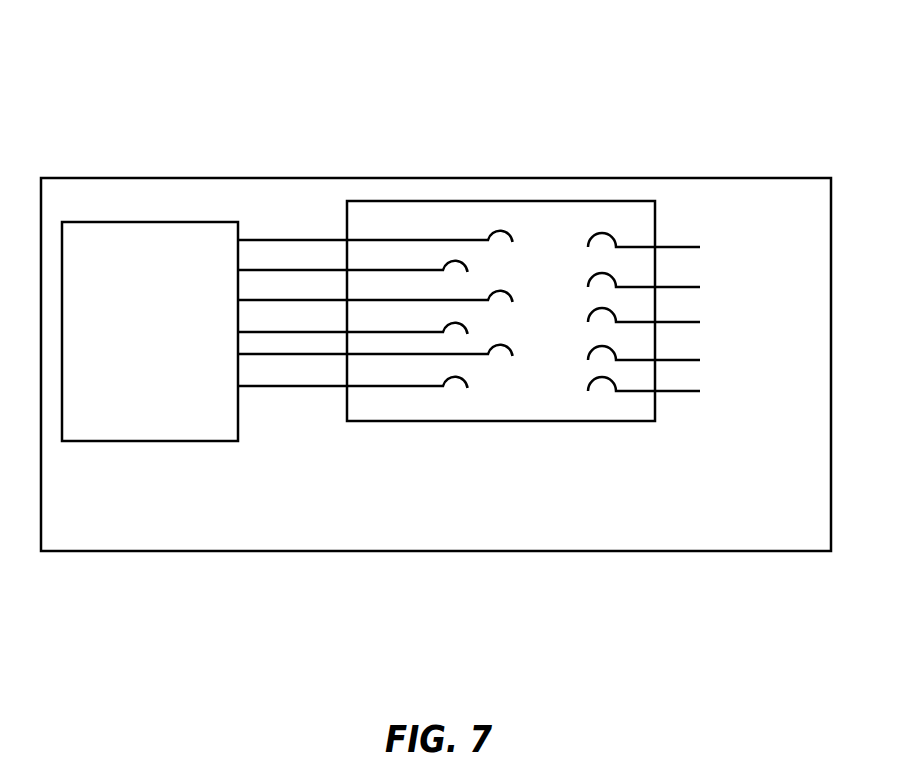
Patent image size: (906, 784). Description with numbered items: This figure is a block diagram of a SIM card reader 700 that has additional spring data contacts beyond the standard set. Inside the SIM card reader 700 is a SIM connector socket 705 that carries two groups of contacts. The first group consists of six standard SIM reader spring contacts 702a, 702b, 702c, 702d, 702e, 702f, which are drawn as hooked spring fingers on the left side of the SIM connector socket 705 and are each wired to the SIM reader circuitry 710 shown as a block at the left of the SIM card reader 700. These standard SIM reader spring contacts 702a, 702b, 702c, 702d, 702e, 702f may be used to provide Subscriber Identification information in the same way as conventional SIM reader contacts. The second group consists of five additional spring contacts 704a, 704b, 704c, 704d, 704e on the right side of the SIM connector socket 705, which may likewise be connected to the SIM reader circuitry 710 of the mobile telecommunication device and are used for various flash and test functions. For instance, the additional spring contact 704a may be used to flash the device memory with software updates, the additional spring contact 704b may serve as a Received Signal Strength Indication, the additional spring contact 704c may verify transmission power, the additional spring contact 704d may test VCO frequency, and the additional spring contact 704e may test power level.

The SIM card reader 700 is at (706, 90).
The SIM reader circuitry 710 is at (162, 222).
The SIM connector socket 705 is at (605, 422).
The standard SIM reader spring contact 702a is at (501, 228).
The standard SIM reader spring contact 702b is at (457, 260).
The standard SIM reader spring contact 702c is at (510, 288).
The standard SIM reader spring contact 702d is at (453, 323).
The standard SIM reader spring contact 702e is at (500, 343).
The standard SIM reader spring contact 702f is at (458, 375).
The additional spring contact 704a is at (680, 248).
The additional spring contact 704b is at (680, 288).
The additional spring contact 704c is at (679, 323).
The additional spring contact 704d is at (680, 361).
The additional spring contact 704e is at (680, 392).